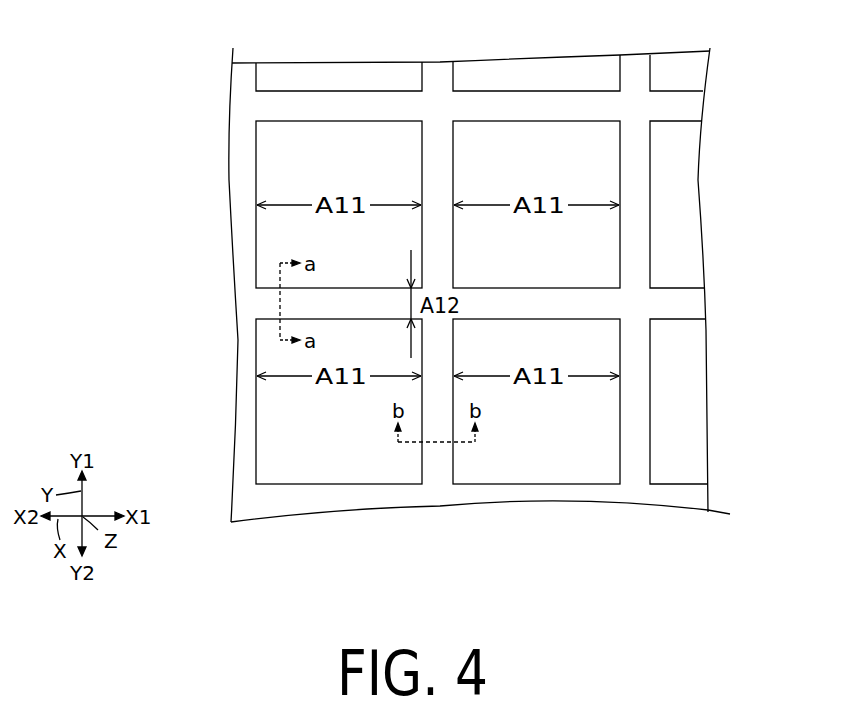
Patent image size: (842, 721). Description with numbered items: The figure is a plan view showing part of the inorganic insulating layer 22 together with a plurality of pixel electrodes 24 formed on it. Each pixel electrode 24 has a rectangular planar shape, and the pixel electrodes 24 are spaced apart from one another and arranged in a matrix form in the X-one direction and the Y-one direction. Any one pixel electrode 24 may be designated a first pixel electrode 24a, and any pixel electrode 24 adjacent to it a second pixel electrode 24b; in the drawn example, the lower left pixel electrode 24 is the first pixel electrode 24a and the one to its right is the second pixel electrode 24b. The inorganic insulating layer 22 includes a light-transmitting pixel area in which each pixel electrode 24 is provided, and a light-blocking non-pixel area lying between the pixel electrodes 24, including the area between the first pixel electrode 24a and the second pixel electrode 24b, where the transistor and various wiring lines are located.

The inorganic insulating layer 22 is at (665, 102).
The pixel electrode 24 is at (353, 121).
The first pixel electrode 24a is at (370, 485).
The second pixel electrode 24b is at (570, 484).